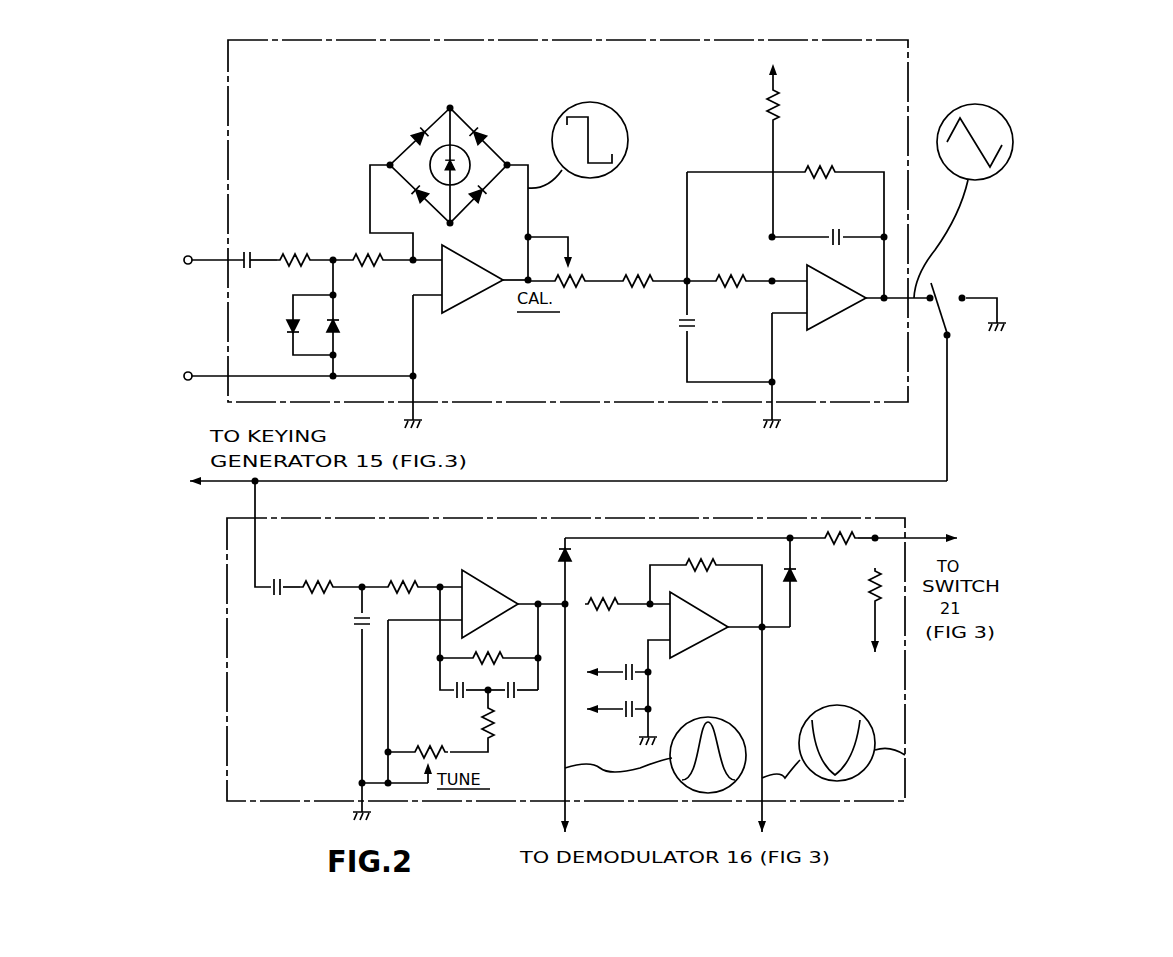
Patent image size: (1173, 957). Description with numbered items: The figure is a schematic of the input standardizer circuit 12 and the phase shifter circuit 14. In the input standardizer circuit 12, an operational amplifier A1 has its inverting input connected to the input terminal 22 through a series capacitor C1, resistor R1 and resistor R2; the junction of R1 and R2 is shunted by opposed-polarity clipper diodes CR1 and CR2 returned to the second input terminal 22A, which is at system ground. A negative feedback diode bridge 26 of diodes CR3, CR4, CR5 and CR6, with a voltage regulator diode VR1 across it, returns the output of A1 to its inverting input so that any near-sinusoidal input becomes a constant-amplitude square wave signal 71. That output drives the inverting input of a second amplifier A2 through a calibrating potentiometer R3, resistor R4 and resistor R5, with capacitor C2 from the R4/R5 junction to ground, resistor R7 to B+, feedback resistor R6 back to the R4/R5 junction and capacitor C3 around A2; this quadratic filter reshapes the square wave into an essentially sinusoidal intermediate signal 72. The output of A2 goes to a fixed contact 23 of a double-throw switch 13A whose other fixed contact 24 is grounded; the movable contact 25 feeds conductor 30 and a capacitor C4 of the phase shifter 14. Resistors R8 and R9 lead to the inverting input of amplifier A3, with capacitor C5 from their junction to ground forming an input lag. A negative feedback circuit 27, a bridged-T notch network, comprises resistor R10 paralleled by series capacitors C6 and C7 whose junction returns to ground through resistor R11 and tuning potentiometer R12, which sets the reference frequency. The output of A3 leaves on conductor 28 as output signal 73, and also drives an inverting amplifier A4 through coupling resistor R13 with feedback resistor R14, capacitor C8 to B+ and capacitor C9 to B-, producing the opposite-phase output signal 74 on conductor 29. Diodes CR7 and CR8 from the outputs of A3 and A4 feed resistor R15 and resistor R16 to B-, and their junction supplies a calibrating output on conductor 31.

The input standardizer circuit 12 is at (908, 62).
The double-throw switch 13A is at (948, 292).
The phase shifter circuit 14 is at (905, 760).
The input terminal 22 is at (190, 256).
The second input terminal 22A is at (189, 372).
The fixed contact 23 is at (930, 303).
The fixed contact 24 is at (968, 296).
The movable contact 25 is at (951, 331).
The diode bridge 26 is at (438, 148).
The negative feedback circuit 27 is at (450, 668).
The conductor 28 is at (560, 812).
The conductor 29 is at (768, 812).
The conductor 30 is at (698, 482).
The conductor 31 is at (927, 540).
The square wave signal 71 is at (618, 120).
The intermediate signal 72 is at (990, 112).
The output signal 73 is at (712, 718).
The output signal 74 is at (828, 716).
The operational amplifier A1 is at (470, 304).
The second operational amplifier A2 is at (838, 310).
The operational amplifier A3 is at (497, 583).
The inverting amplifier A4 is at (700, 638).
The capacitor C1 is at (248, 250).
The capacitor C2 is at (668, 326).
The capacitor C3 is at (830, 231).
The capacitor C4 is at (280, 578).
The capacitor C5 is at (350, 626).
The capacitor C6 is at (448, 698).
The capacitor C7 is at (512, 703).
The capacitor C8 is at (628, 664).
The capacitor C9 is at (620, 720).
The diode CR1 is at (285, 324).
The diode CR2 is at (341, 325).
The diode CR3 is at (406, 130).
The diode CR4 is at (485, 126).
The diode CR5 is at (412, 202).
The diode CR6 is at (481, 205).
The diode CR7 is at (572, 556).
The diode CR8 is at (798, 576).
The resistor R1 is at (296, 252).
The resistor R2 is at (372, 268).
The calibrating potentiometer R3 is at (578, 292).
The resistor R4 is at (640, 272).
The resistor R5 is at (725, 272).
The feedback resistor R6 is at (843, 164).
The resistor R7 is at (784, 116).
The resistor R8 is at (331, 582).
The resistor R9 is at (406, 582).
The resistor R10 is at (490, 657).
The resistor R11 is at (494, 738).
The tuning potentiometer R12 is at (434, 751).
The coupling resistor R13 is at (602, 612).
The negative feedback resistor R14 is at (688, 566).
The resistor R15 is at (843, 548).
The resistor R16 is at (870, 608).
The voltage regulator diode VR1 is at (472, 162).